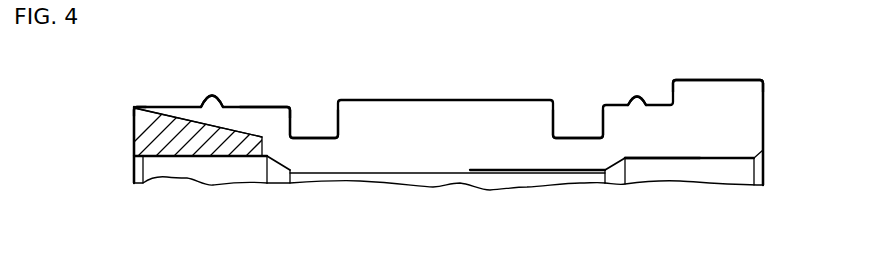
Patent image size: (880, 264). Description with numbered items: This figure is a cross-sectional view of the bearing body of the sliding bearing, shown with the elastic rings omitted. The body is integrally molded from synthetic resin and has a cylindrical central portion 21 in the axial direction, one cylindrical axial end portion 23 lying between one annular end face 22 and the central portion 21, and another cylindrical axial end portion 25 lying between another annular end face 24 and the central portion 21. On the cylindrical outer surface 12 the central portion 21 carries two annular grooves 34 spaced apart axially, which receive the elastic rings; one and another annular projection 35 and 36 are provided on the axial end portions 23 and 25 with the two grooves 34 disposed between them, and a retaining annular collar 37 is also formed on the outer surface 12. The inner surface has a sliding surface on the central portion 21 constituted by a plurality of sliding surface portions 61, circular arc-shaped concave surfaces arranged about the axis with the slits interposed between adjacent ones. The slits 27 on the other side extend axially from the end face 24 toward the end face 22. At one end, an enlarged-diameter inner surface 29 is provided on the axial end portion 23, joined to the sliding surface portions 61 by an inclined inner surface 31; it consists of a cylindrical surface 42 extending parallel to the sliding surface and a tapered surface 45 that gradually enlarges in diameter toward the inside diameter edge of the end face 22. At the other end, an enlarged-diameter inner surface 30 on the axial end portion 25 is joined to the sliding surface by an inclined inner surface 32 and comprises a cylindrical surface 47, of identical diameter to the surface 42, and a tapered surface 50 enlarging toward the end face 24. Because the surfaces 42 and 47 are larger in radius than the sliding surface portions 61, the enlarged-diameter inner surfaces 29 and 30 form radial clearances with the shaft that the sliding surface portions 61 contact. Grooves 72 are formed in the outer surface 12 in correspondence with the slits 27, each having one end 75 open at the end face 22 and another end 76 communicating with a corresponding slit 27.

The outer surface 12 is at (442, 101).
The central portion 21 is at (477, 147).
The end face 22 is at (133, 125).
The axial end portion 23 is at (170, 143).
The end face 24 is at (765, 118).
The axial end portion 25 is at (655, 137).
The slits 27 is at (518, 150).
The enlarged-diameter inner surface 29 is at (195, 170).
The enlarged-diameter inner surface 30 is at (702, 173).
The inclined inner surface 31 is at (280, 175).
The inclined inner surface 32 is at (615, 177).
The annular grooves 34 is at (312, 125).
The annular projection 35 is at (212, 96).
The annular projection 36 is at (637, 96).
The retaining annular collar 37 is at (712, 87).
The cylindrical surface 42 is at (230, 170).
The tapered surface 45 is at (134, 168).
The cylindrical surface 47 is at (735, 172).
The tapered surface 50 is at (764, 170).
The sliding surface portions 61 is at (435, 182).
The grooves 72 is at (200, 114).
The one end 75 is at (134, 106).
The another end 76 is at (264, 117).